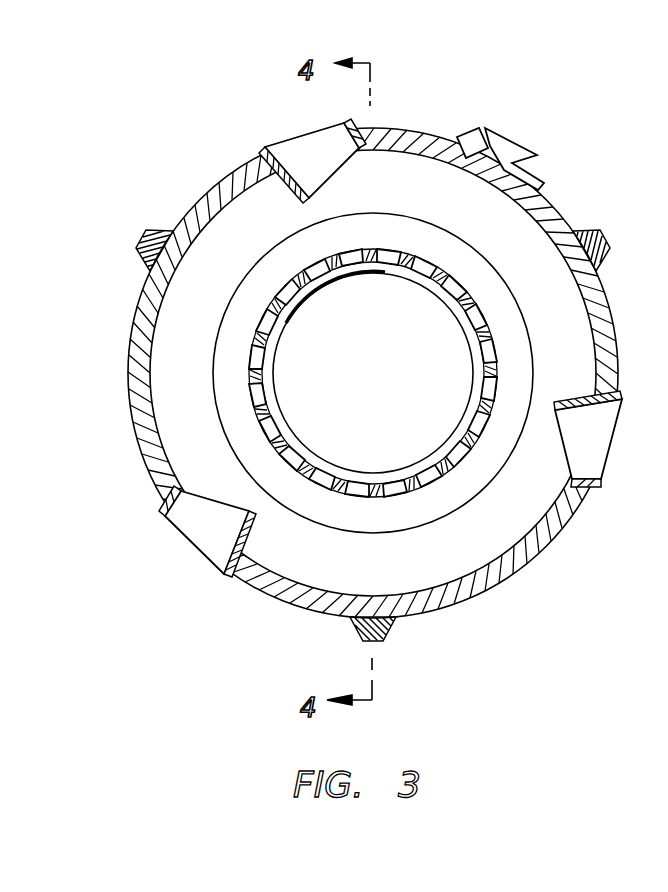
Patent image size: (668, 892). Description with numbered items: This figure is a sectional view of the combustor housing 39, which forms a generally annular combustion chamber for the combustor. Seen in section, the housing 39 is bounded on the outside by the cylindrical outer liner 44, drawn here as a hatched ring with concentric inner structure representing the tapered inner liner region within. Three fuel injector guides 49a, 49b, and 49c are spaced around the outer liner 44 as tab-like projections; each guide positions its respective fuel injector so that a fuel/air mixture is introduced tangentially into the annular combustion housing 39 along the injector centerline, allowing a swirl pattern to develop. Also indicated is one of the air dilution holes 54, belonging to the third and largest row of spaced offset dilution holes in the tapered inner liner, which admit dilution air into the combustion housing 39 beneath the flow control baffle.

The combustor housing 39 is at (585, 187).
The cylindrical outer liner 44 is at (134, 431).
The fuel injector guide 49a is at (305, 134).
The fuel injector guide 49b is at (617, 437).
The fuel injector guide 49c is at (195, 547).
The air dilution holes 54 is at (473, 135).